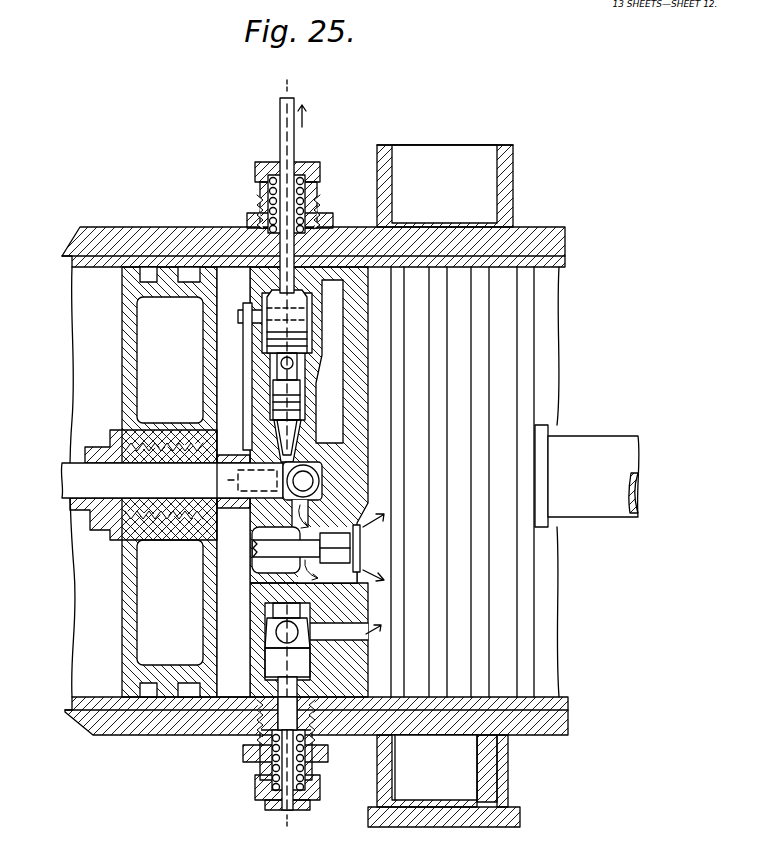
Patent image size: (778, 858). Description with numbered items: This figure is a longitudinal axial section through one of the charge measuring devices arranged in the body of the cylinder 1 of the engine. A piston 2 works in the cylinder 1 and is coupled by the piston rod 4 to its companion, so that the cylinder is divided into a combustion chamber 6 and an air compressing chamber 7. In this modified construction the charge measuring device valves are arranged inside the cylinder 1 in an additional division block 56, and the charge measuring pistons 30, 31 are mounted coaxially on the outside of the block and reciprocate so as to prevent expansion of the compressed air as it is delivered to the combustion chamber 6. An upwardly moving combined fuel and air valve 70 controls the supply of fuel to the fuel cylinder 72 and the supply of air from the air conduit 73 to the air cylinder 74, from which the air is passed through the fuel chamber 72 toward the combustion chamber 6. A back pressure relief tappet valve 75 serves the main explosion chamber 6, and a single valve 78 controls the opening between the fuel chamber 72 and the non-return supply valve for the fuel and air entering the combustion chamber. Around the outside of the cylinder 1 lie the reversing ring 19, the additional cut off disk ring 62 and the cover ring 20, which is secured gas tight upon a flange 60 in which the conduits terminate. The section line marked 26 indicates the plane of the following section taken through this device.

The cylinder 1 is at (140, 723).
The piston 2 is at (508, 637).
The piston rod 4 is at (587, 476).
The combustion chamber 6 is at (317, 425).
The air compressing chamber 7 is at (247, 390).
The reversing ring 19 is at (394, 770).
The cover ring 20 is at (436, 812).
The seating 26 is at (289, 454).
The charge measuring piston 30 is at (128, 389).
The charge measuring piston 31 is at (97, 480).
The division block 56 is at (349, 720).
The flange 60 is at (506, 792).
The cut off disk ring 62 is at (498, 767).
The combined fuel and air valve 70 is at (281, 133).
The fuel cylinder 72 is at (230, 480).
The air conduit 73 is at (301, 357).
The air cylinder 74 is at (230, 355).
The back pressure relief tappet valve 75 is at (287, 706).
The single valve 78 is at (361, 548).